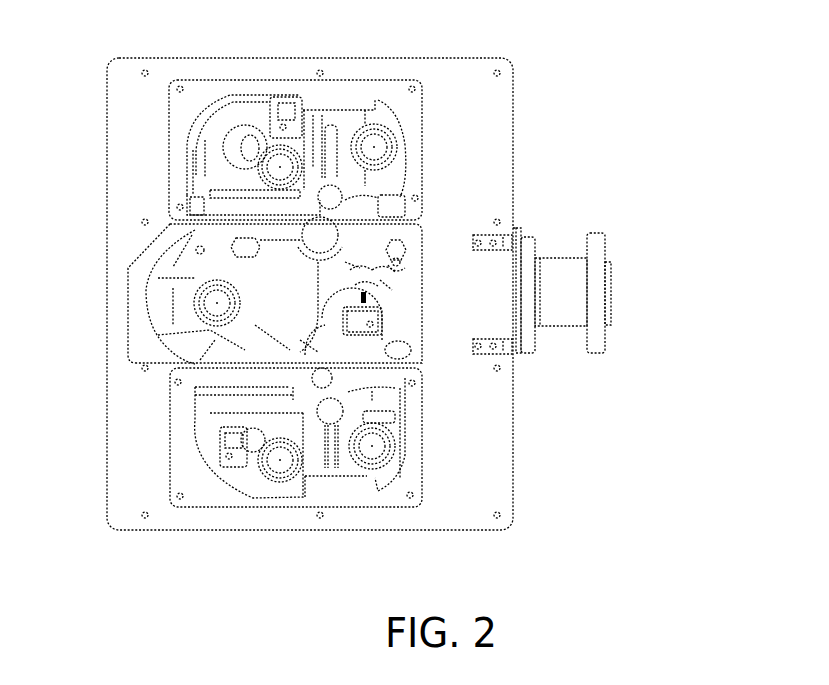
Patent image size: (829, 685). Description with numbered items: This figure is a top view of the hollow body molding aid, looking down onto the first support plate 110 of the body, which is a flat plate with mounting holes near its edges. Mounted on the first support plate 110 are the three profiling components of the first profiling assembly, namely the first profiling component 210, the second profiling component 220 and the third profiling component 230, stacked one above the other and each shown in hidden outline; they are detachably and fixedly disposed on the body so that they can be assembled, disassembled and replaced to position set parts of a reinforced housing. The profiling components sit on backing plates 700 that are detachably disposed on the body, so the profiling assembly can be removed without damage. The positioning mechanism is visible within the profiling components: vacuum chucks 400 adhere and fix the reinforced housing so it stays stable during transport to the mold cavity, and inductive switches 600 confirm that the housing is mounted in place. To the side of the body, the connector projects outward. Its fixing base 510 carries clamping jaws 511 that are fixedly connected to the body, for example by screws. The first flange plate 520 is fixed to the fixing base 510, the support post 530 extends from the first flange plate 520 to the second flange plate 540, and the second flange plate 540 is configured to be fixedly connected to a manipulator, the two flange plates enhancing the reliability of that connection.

The first support plate 110 is at (465, 80).
The first profiling component 210 is at (205, 445).
The second profiling component 220 is at (162, 279).
The third profiling component 230 is at (205, 130).
The vacuum chuck 400 is at (280, 463).
The fixing base 510 is at (518, 243).
The clamping jaw 511 is at (493, 346).
The first flange plate 520 is at (528, 273).
The support post 530 is at (563, 310).
The second flange plate 540 is at (605, 293).
The inductive switch 600 is at (287, 115).
The backing plate 700 is at (356, 87).